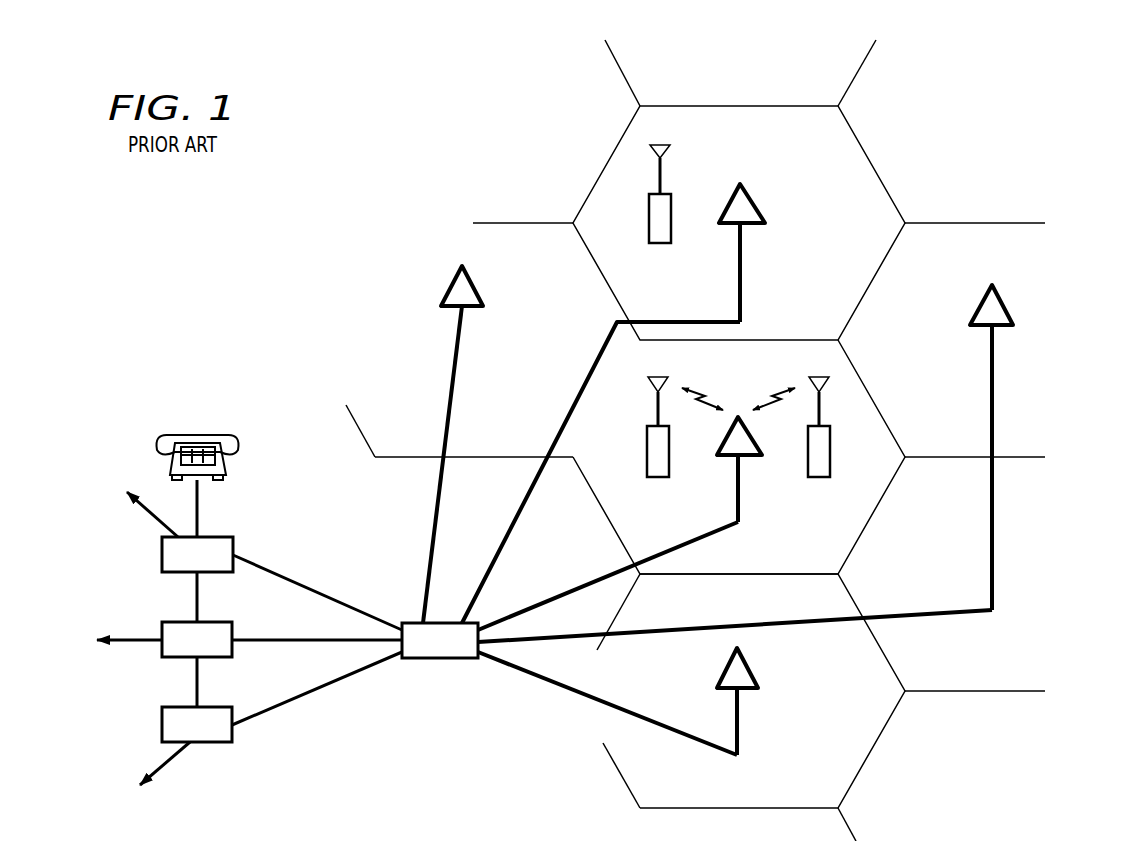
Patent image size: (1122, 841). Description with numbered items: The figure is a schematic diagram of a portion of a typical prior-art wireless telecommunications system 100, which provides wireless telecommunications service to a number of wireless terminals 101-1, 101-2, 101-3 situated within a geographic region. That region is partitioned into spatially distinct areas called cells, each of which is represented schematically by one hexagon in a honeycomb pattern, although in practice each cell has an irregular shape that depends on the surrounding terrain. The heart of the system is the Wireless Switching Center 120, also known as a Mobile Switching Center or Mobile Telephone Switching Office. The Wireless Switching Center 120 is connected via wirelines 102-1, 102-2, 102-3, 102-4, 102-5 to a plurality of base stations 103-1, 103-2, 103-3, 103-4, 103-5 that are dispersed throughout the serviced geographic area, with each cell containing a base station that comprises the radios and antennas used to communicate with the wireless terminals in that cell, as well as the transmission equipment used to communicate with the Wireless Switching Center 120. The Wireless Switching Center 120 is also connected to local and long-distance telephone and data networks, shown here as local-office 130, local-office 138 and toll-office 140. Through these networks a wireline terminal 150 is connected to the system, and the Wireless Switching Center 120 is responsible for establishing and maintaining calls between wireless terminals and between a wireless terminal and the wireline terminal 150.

The wireless telecommunications system 100 is at (191, 208).
The wireless terminal 101-1 is at (658, 477).
The wireless terminal 101-2 is at (819, 477).
The wireless terminal 101-3 is at (660, 243).
The wireline 102-1 is at (562, 594).
The wireline 102-2 is at (521, 505).
The wireline 102-3 is at (423, 566).
The wireline 102-4 is at (558, 641).
The wireline 102-5 is at (539, 679).
The base station 103-1 is at (740, 500).
The base station 103-2 is at (742, 258).
The base station 103-3 is at (464, 343).
The base station 103-4 is at (994, 372).
The base station 103-5 is at (739, 733).
The Wireless Switching Center 120 is at (440, 660).
The local-office 130 is at (162, 553).
The local-office 138 is at (162, 723).
The toll-office 140 is at (162, 625).
The wireline terminal 150 is at (198, 430).